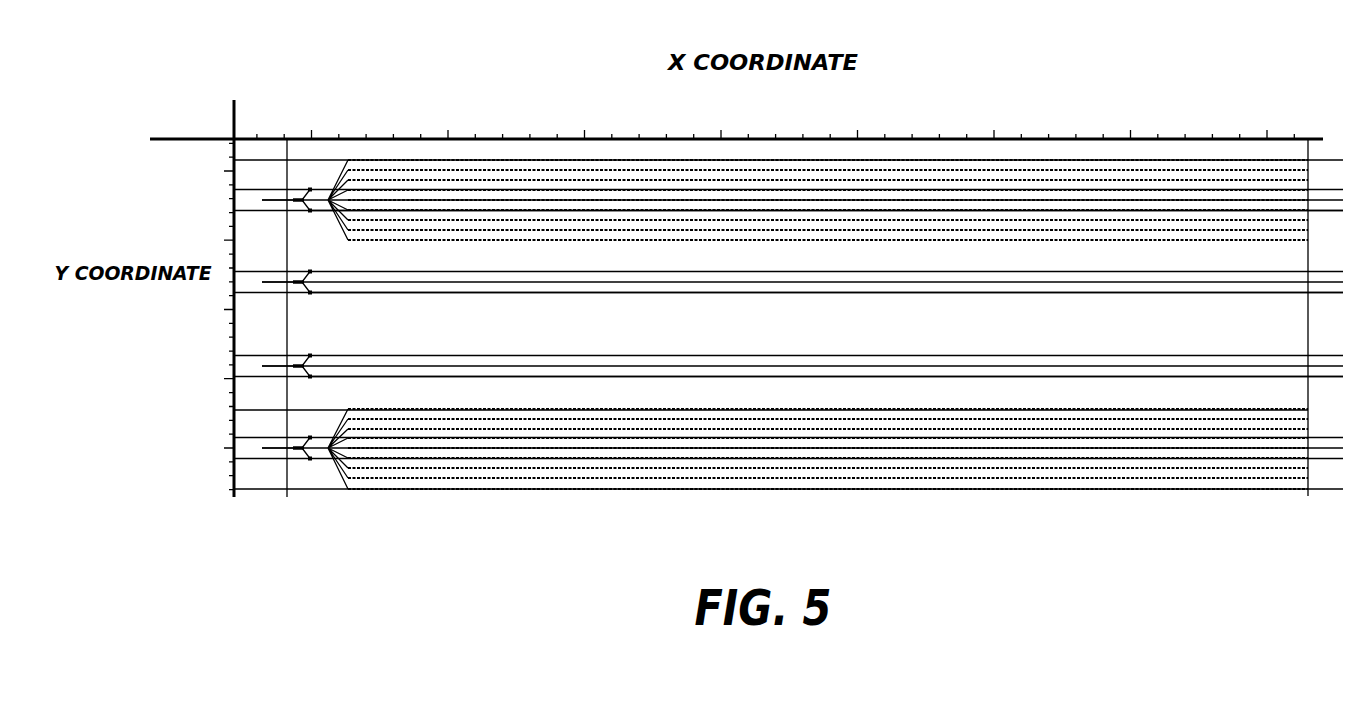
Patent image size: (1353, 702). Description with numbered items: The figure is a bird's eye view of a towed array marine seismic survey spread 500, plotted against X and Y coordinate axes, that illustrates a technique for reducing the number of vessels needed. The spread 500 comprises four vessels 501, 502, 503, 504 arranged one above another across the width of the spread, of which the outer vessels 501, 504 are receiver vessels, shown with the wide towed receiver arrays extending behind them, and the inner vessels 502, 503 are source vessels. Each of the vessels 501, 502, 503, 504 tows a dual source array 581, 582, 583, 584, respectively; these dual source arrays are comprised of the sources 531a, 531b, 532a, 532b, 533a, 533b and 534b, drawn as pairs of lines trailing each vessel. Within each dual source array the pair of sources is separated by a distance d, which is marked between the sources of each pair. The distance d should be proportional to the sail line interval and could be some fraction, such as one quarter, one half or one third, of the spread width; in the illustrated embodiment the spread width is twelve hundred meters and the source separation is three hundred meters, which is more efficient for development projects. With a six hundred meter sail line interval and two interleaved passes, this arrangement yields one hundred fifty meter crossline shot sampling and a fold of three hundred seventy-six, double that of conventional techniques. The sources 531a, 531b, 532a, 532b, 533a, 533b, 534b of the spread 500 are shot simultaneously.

The spread 500 is at (427, 538).
The receiver vessel 501 is at (302, 200).
The source vessel 502 is at (302, 282).
The source vessel 503 is at (302, 366).
The receiver vessel 504 is at (302, 448).
The dual source array 581 is at (302, 200).
The dual source array 582 is at (302, 282).
The dual source array 583 is at (302, 366).
The dual source array 584 is at (302, 448).
The source 531a is at (310, 190).
The source 531b is at (310, 210).
The source 532a is at (310, 272).
The source 532b is at (310, 292).
The source 533a is at (310, 356).
The source 533b is at (310, 376).
The source 534b is at (310, 438).